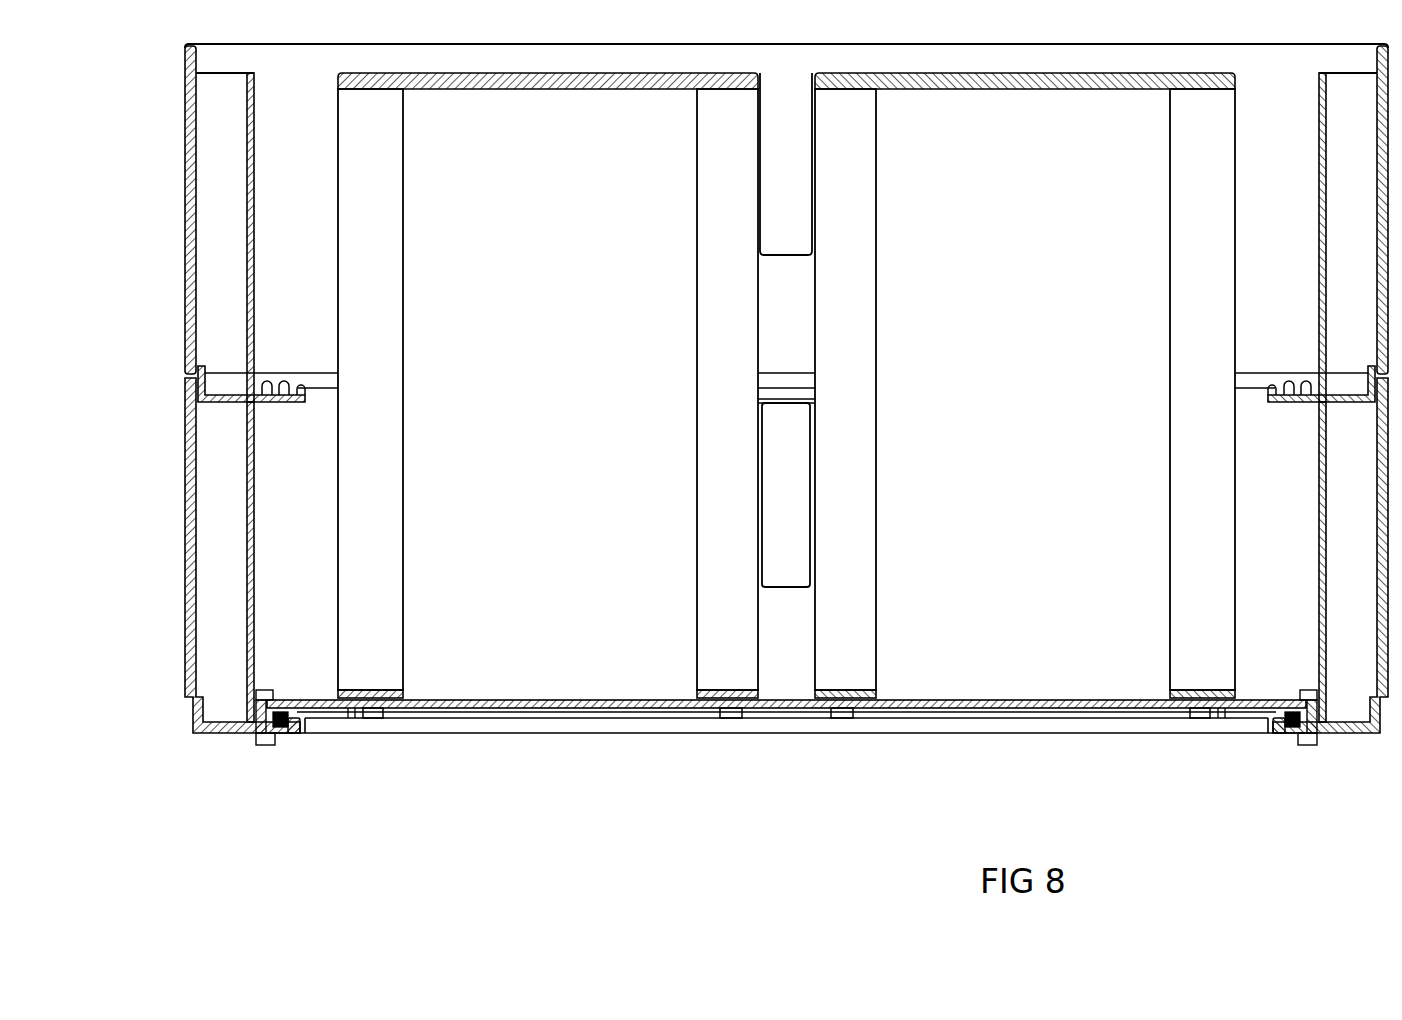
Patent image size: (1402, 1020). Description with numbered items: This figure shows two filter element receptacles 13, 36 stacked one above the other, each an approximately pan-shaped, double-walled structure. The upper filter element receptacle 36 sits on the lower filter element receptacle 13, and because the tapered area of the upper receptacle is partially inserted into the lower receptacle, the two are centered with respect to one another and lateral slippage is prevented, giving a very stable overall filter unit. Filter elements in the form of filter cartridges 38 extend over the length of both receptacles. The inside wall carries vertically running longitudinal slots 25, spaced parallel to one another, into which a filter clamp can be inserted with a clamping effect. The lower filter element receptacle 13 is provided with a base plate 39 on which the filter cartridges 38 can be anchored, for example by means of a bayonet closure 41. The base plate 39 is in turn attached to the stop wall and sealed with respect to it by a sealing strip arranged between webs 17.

The filter element receptacle 13 is at (176, 565).
The webs 17 is at (290, 730).
The longitudinal slots 25 is at (786, 100).
The filter element receptacle 36 is at (176, 209).
The filter cartridges 38 is at (538, 660).
The base plate 39 is at (798, 708).
The bayonet closure 41 is at (731, 718).